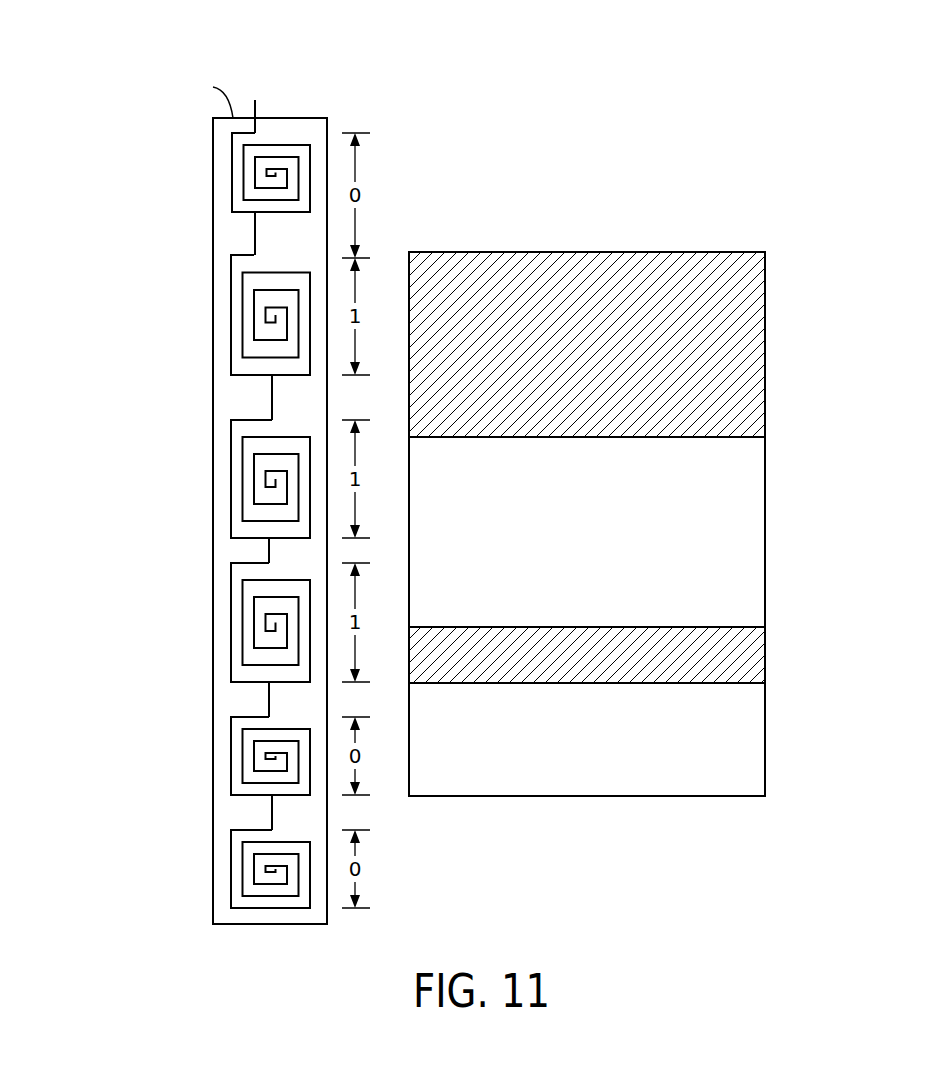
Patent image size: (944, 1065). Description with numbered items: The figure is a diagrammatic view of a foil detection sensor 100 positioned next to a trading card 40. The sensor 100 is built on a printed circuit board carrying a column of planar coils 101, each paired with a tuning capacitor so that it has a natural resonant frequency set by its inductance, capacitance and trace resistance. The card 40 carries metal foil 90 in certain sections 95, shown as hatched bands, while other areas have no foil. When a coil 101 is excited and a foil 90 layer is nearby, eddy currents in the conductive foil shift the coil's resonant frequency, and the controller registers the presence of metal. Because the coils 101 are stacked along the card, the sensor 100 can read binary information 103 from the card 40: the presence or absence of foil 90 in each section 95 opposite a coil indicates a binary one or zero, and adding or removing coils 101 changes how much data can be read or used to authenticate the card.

The foil detection sensor 100 is at (156, 134).
The planar coil 101 is at (231, 190).
The binary information 103 is at (310, 78).
The trading card 40 is at (613, 252).
The foil 90 is at (577, 345).
The sections 95 is at (773, 252).